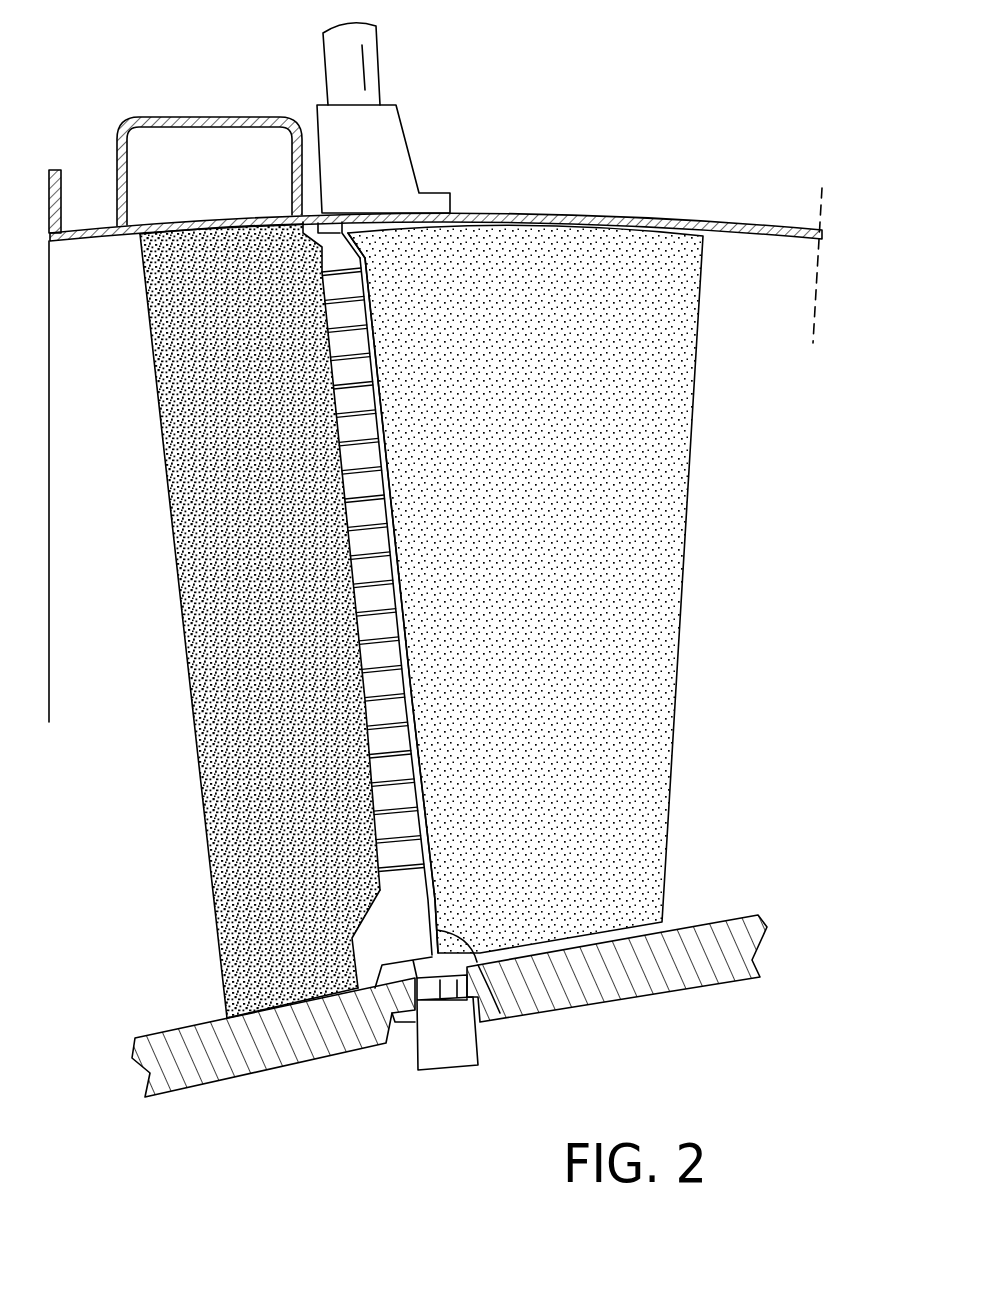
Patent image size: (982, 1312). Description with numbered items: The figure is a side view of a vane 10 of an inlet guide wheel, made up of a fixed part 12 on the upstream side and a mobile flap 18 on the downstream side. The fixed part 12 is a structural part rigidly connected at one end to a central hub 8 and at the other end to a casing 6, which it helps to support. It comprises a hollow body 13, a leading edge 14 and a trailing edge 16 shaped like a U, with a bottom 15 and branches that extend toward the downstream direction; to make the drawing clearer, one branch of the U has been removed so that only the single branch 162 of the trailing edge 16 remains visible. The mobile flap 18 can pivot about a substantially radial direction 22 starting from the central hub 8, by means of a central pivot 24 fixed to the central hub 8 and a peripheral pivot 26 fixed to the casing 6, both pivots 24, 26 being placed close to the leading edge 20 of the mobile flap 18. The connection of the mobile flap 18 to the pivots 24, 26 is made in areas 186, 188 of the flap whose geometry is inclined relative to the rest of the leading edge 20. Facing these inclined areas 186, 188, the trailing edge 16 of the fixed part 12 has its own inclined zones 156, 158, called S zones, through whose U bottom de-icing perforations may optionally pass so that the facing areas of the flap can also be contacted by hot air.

The casing 6 is at (693, 218).
The central hub 8 is at (192, 1072).
The vane 10 is at (725, 522).
The fixed part 12 is at (155, 425).
The hollow body 13 is at (207, 575).
The leading edge 14 is at (197, 765).
The bottom 15 is at (337, 647).
The trailing edge 16 is at (340, 532).
The mobile flap 18 is at (672, 764).
The leading edge 20 is at (417, 762).
The radial direction 22 is at (373, 52).
The central pivot 24 is at (433, 1060).
The peripheral pivot 26 is at (403, 162).
The S zone 156 is at (270, 238).
The S zone 158 is at (358, 900).
The branch 162 is at (340, 428).
The area 186 is at (320, 205).
The area 188 is at (503, 1018).